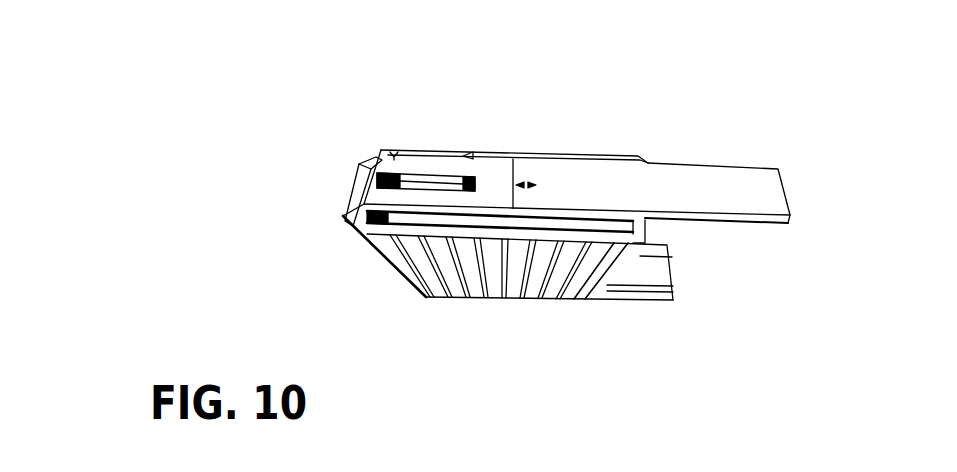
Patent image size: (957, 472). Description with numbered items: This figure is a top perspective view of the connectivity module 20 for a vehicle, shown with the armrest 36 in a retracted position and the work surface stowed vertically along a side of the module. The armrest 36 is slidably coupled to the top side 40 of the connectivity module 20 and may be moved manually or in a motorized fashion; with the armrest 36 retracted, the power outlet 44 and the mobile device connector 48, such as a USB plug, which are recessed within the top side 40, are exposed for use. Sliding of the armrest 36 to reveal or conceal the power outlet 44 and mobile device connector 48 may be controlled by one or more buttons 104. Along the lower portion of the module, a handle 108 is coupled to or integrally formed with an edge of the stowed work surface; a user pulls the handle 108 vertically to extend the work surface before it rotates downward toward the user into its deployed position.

The connectivity module 20 is at (843, 147).
The armrest 36 is at (733, 183).
The top side 40 is at (498, 182).
The power outlet 44 is at (383, 149).
The mobile device connector 48 is at (467, 183).
The buttons 104 is at (533, 182).
The handle 108 is at (390, 176).